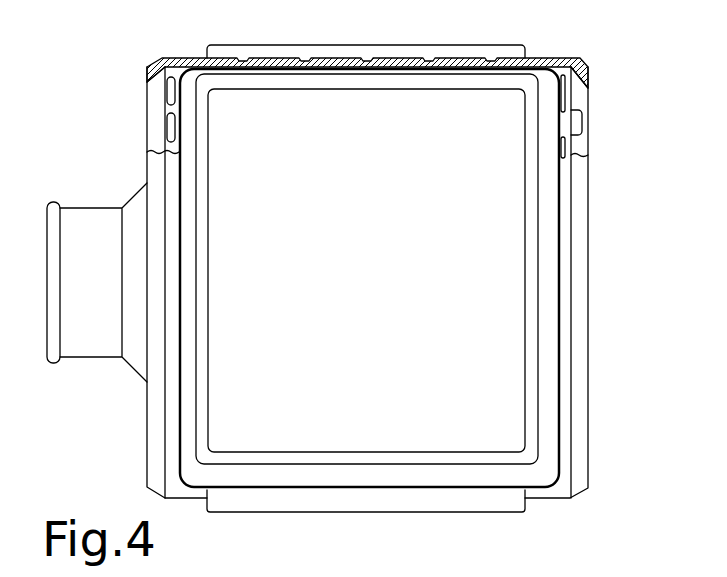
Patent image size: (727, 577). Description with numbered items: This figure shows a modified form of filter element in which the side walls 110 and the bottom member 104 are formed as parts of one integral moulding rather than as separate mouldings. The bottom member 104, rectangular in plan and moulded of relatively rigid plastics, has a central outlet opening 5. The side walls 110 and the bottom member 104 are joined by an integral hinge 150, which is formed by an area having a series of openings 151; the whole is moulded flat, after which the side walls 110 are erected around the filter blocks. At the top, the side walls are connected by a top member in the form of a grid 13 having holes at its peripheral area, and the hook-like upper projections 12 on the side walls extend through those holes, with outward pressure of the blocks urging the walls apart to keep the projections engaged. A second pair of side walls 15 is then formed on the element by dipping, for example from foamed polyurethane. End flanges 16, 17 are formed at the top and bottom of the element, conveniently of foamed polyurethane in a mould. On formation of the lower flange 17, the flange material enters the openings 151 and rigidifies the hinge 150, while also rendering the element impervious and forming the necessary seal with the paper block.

The central outlet opening 5 is at (77, 222).
The upper projections 12 is at (582, 121).
The grid 13 is at (575, 147).
The second pair of side walls 15 is at (283, 59).
The end flange 16 is at (582, 61).
The end flange 17 is at (152, 71).
The bottom member 104 is at (147, 172).
The side walls 110 is at (240, 383).
The integral hinge 150 is at (156, 116).
The openings 151 is at (174, 91).